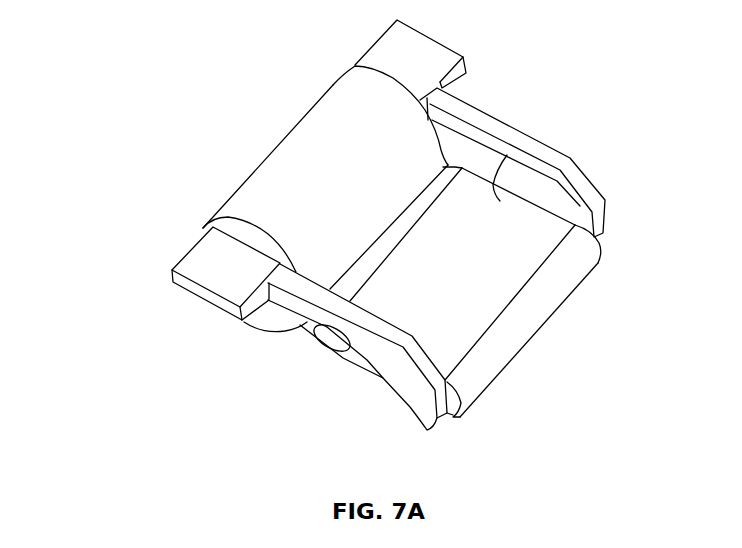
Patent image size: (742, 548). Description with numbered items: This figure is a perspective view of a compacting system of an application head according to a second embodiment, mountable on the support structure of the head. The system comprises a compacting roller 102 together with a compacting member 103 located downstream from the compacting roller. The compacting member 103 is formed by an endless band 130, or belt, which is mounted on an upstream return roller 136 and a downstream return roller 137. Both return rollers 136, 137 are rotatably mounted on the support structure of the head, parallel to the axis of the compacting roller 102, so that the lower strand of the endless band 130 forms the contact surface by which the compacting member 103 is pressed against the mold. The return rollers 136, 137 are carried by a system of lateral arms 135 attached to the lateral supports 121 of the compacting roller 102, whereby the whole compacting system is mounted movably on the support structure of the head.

The compacting roller 102 is at (292, 133).
The compacting member 103 is at (505, 160).
The lateral supports 121 is at (192, 258).
The endless band 130 is at (360, 368).
The lateral arms 135 is at (582, 171).
The upstream return roller 136 is at (318, 340).
The downstream return roller 137 is at (450, 414).